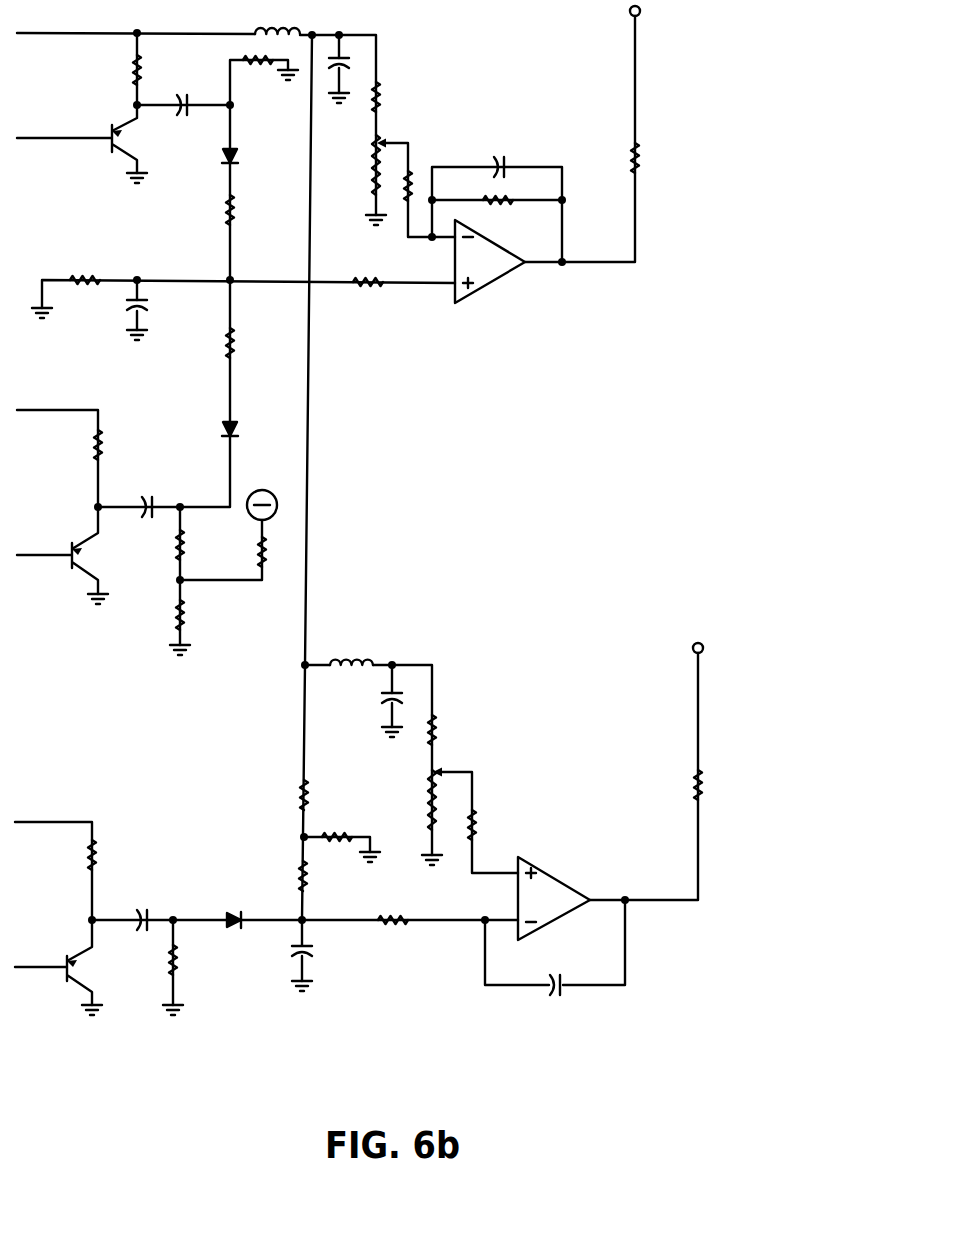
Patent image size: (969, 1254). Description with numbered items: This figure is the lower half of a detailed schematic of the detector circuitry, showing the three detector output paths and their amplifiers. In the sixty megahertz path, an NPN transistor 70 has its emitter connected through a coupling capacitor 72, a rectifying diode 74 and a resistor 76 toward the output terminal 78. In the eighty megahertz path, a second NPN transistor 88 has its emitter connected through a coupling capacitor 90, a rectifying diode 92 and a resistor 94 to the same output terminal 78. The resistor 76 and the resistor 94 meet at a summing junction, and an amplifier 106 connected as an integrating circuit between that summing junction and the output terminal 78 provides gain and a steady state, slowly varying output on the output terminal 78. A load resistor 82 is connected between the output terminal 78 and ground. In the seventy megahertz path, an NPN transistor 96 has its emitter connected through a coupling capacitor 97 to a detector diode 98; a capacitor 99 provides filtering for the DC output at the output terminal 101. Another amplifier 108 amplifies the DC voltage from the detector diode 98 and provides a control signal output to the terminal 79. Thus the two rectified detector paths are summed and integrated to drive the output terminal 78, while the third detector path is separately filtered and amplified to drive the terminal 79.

The NPN transistor 70 is at (100, 558).
The coupling capacitor 72 is at (147, 492).
The rectifying diode 74 is at (233, 426).
The resistor 76 is at (233, 341).
The output terminal 78 is at (635, 57).
The terminal 79 is at (698, 692).
The load resistor 82 is at (85, 286).
The NPN transistor 88 is at (150, 138).
The coupling capacitor 90 is at (182, 98).
The rectifying diode 92 is at (235, 154).
The resistor 94 is at (235, 206).
The NPN transistor 96 is at (93, 967).
The coupling capacitor 97 is at (139, 909).
The detector diode 98 is at (238, 909).
The capacitor 99 is at (312, 954).
The output terminal 101 is at (368, 925).
The amplifier 106 is at (495, 280).
The amplifier 108 is at (543, 868).